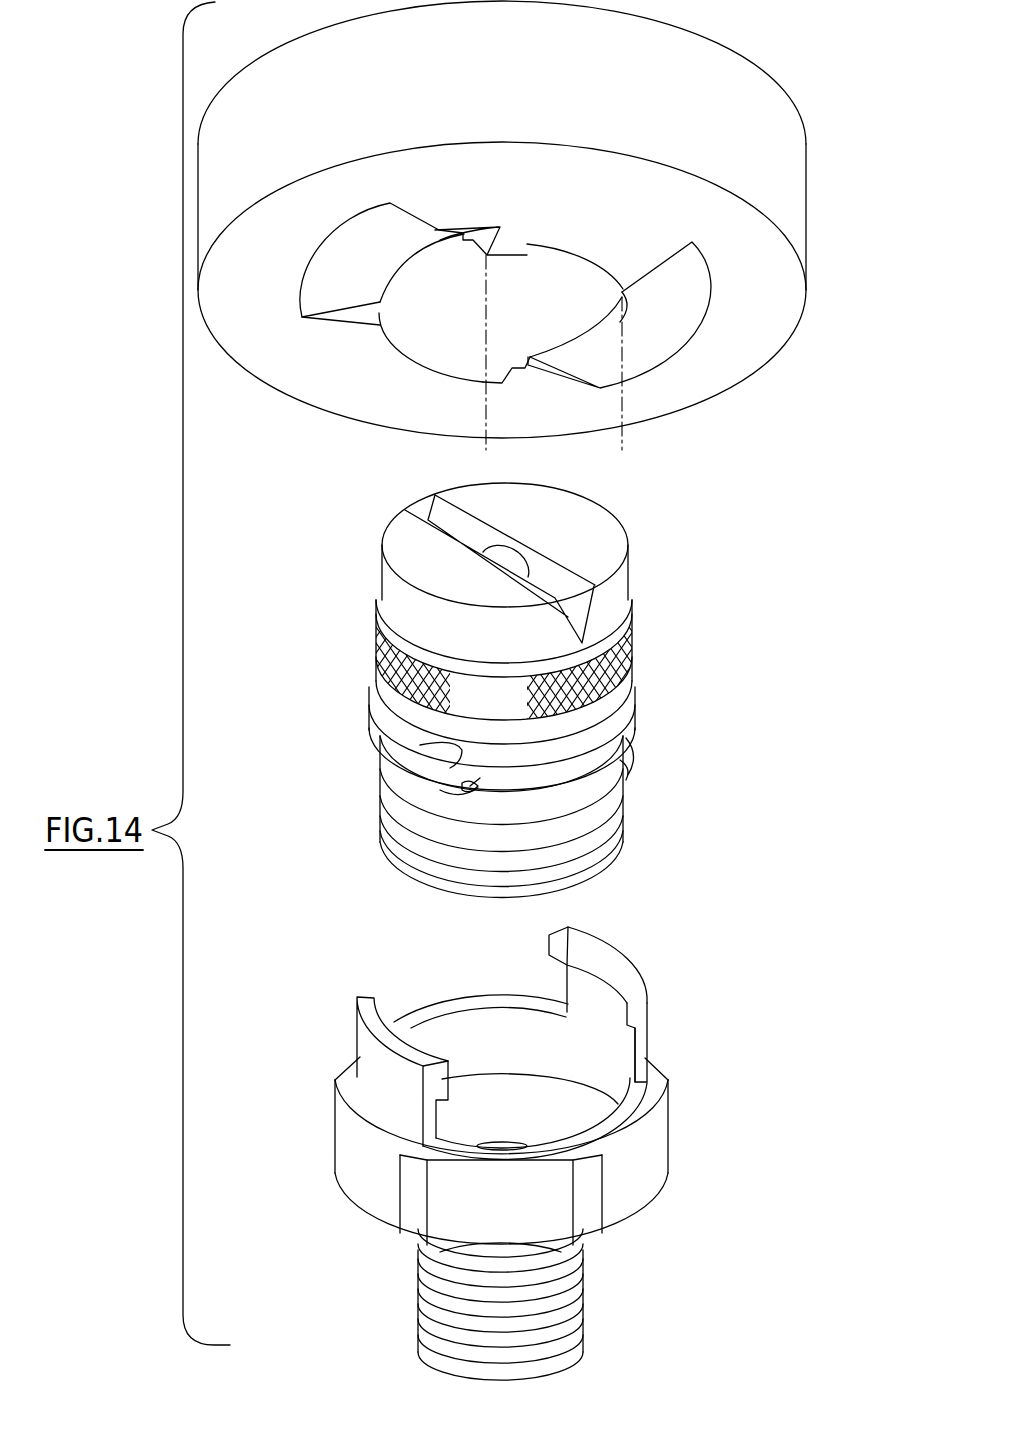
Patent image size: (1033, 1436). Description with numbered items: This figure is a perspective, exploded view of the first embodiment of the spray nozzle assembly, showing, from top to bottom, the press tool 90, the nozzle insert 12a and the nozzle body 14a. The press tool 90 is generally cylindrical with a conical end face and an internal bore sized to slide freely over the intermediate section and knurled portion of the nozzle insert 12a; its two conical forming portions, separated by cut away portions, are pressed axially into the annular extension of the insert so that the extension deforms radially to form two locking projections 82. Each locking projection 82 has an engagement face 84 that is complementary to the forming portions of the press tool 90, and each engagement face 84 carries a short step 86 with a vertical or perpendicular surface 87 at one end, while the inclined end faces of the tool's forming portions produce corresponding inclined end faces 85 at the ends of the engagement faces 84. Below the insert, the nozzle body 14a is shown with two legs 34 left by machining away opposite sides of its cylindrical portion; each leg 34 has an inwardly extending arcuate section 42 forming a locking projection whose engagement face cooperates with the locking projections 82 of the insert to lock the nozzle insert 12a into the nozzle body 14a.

The press tool 90 is at (776, 340).
The nozzle insert, first embodiment 12a is at (610, 817).
The engagement face 84 is at (603, 779).
The locking projection 82 is at (527, 796).
The inclined end face 85 is at (628, 750).
The short step 86 is at (466, 784).
The vertical or perpendicular surface 87 is at (420, 745).
The nozzle body, first embodiment 14a is at (647, 1152).
The arcuate section 42 is at (628, 975).
The leg 34 is at (640, 1033).